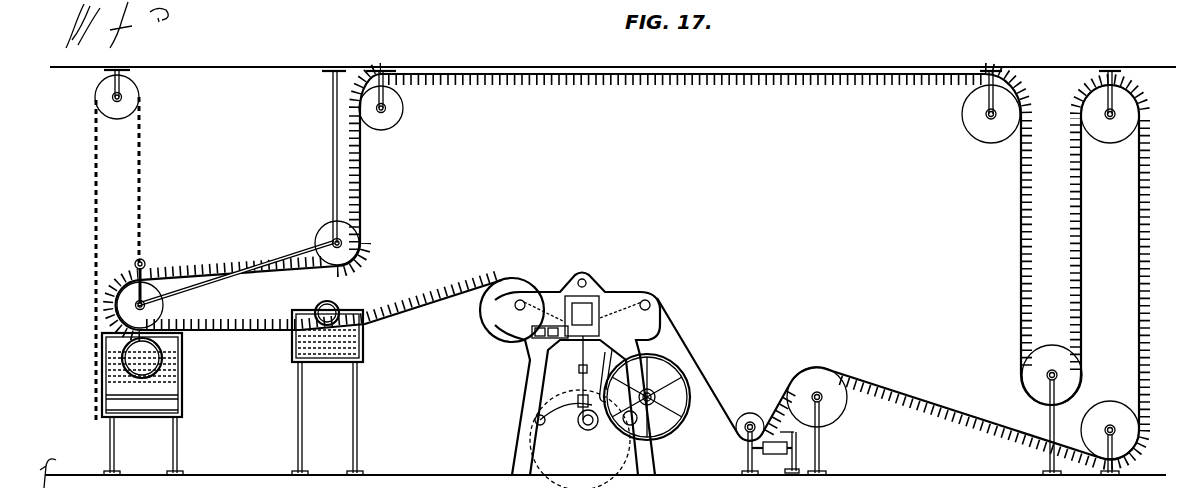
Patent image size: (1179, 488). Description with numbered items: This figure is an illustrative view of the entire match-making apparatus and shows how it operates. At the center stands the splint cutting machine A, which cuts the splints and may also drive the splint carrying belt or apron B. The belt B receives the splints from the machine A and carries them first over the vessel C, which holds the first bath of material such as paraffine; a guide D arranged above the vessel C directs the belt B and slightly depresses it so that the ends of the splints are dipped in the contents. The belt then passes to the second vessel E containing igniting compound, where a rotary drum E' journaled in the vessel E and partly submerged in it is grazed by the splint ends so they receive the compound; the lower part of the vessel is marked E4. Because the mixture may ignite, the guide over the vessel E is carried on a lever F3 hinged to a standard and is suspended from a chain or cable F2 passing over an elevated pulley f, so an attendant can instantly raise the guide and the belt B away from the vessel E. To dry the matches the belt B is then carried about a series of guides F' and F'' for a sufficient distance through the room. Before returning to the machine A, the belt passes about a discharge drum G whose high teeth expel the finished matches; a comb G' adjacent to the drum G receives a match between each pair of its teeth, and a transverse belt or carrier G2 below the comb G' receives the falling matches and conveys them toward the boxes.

The splint cutting machine A is at (585, 374).
The splint carrying belt or apron B is at (284, 268).
The vessel C is at (363, 340).
The guide D is at (335, 306).
The second vessel E is at (151, 404).
The rotary drum E' is at (142, 358).
The lower compartment of tank E4 is at (148, 406).
The guide F' is at (599, 273).
The guide F'' is at (963, 273).
The chain or cable F2 is at (140, 180).
The lever F3 is at (203, 290).
The pulley f is at (123, 98).
The discharge drum G is at (750, 432).
The comb G' is at (791, 447).
The belt or carrier G2 is at (772, 458).